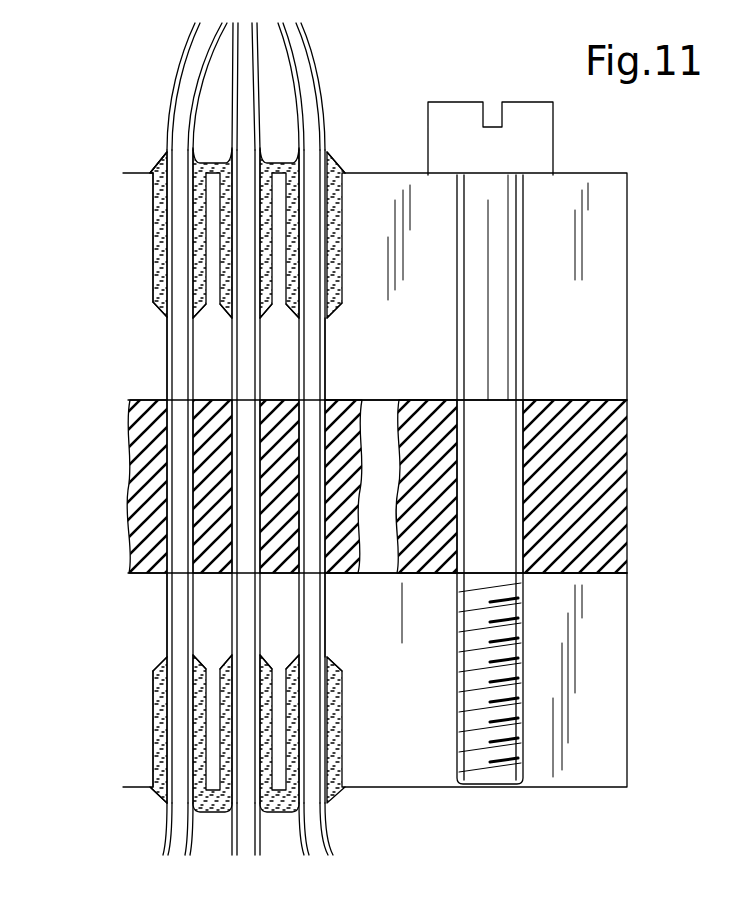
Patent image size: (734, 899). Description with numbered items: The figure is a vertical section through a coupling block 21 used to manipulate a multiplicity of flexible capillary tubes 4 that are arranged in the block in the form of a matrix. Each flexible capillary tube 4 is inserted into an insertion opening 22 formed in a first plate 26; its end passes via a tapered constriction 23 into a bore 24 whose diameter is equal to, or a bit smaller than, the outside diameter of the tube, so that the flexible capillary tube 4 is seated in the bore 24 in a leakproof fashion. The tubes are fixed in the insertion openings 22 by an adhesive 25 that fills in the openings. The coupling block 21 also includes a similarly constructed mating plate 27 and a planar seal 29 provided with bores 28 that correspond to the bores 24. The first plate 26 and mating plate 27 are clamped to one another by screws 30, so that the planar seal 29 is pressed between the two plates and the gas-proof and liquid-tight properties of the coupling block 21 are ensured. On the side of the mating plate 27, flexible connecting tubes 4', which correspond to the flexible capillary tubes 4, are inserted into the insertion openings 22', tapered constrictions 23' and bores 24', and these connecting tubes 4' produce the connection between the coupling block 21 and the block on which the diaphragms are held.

The flexible capillary tube 4 is at (243, 413).
The flexible connecting tube 4' is at (223, 829).
The coupling block 21 is at (24, 507).
The insertion opening 22 is at (211, 233).
The insertion opening 22' is at (207, 733).
The tapered constriction 23 is at (207, 305).
The tapered constriction 23' is at (207, 663).
The bore 24 is at (205, 358).
The bore 24' is at (199, 615).
The adhesive 25 is at (157, 183).
The first plate 26 is at (385, 197).
The mating plate 27 is at (423, 753).
The bore 28 is at (173, 527).
The planar seal 29 is at (628, 483).
The screw 30 is at (500, 272).